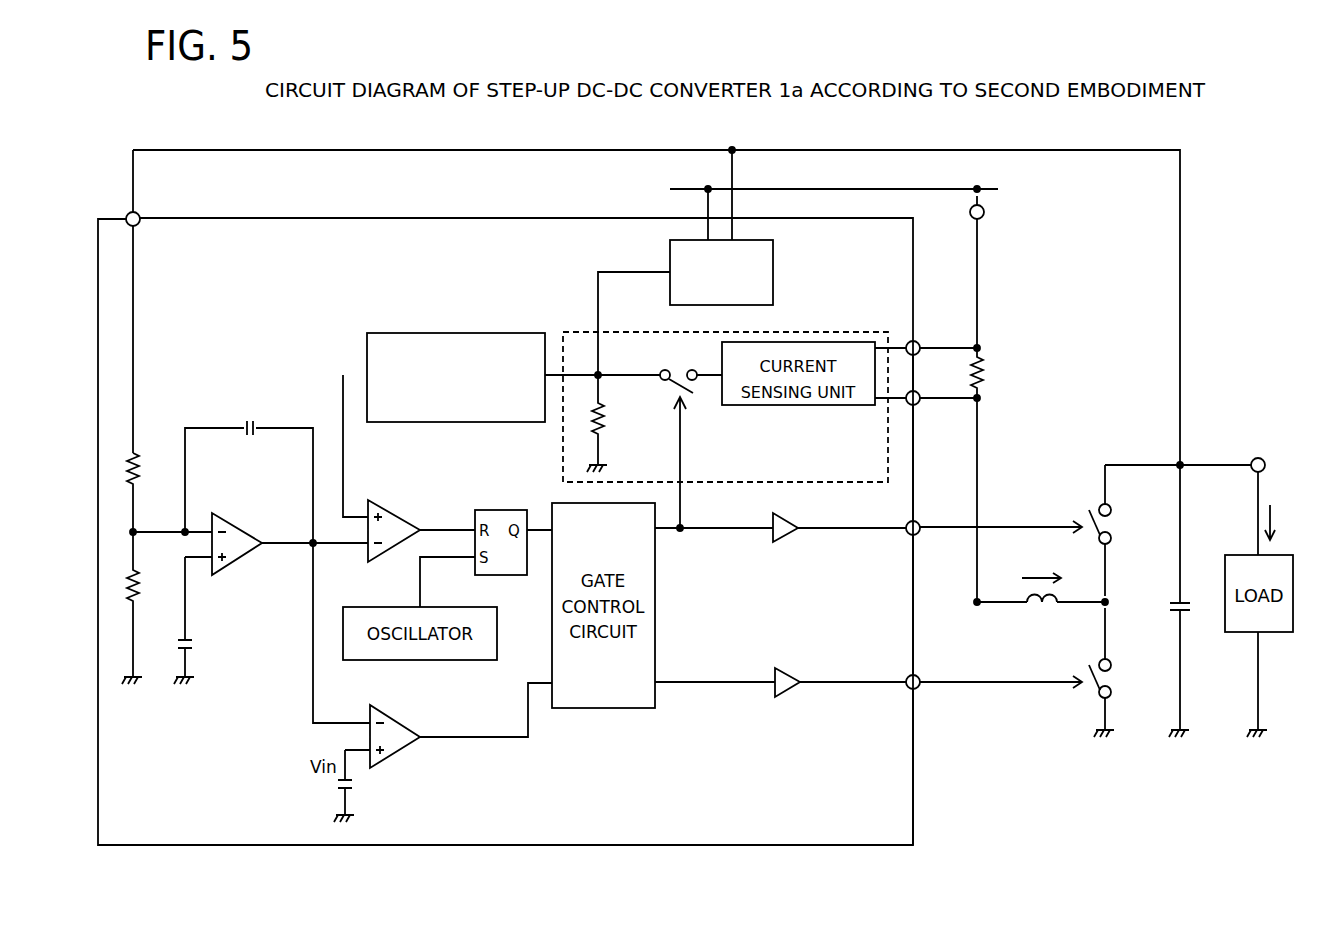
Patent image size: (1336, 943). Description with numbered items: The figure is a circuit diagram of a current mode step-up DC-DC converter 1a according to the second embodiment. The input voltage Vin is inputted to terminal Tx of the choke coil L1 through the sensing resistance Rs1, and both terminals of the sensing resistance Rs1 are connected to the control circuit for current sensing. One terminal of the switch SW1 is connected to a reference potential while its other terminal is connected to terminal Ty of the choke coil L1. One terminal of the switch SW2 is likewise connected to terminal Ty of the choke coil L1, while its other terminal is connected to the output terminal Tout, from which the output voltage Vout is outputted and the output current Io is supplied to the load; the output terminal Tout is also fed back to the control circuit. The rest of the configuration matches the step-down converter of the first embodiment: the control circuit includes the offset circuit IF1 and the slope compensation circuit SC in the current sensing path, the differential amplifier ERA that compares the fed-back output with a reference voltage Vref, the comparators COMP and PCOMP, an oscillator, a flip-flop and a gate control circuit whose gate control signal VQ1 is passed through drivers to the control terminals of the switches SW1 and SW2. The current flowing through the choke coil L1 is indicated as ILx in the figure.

The step-up DC-DC converter 1a is at (1237, 138).
The slope compensation circuit SC is at (384, 333).
The offset circuit IF1 is at (776, 252).
The differential amplifier ERA is at (230, 532).
The comparator COMP is at (381, 468).
The comparator PCOMP is at (454, 724).
The sensing resistor Rs1 is at (997, 410).
The switch SW1 is at (1036, 672).
The switch SW2 is at (1036, 530).
The choke coil L1 is at (1042, 616).
The terminal of the choke coil Tx is at (985, 602).
The terminal of the choke coil Ty is at (1094, 602).
The output terminal Tout is at (1268, 497).
The input voltage Vin is at (839, 191).
The output voltage Vout is at (1178, 588).
The gate control signal VQ1 is at (780, 605).
The inductor current ILx is at (1041, 567).
The output current Io is at (1279, 522).
The reference voltage Vref is at (203, 620).